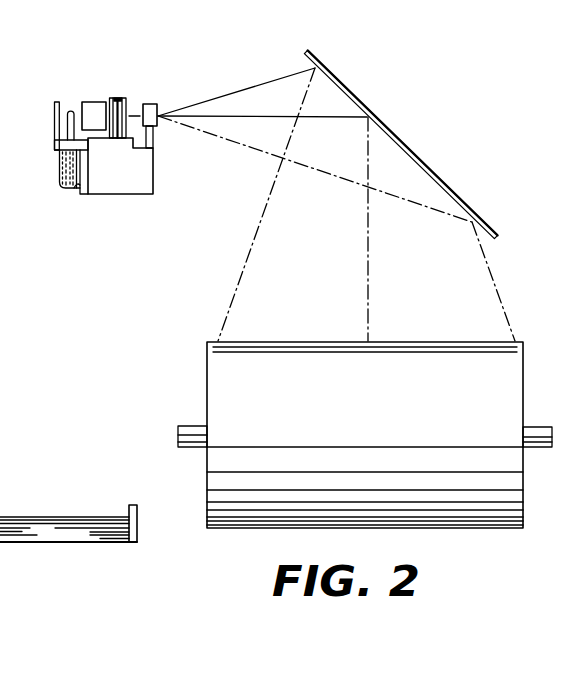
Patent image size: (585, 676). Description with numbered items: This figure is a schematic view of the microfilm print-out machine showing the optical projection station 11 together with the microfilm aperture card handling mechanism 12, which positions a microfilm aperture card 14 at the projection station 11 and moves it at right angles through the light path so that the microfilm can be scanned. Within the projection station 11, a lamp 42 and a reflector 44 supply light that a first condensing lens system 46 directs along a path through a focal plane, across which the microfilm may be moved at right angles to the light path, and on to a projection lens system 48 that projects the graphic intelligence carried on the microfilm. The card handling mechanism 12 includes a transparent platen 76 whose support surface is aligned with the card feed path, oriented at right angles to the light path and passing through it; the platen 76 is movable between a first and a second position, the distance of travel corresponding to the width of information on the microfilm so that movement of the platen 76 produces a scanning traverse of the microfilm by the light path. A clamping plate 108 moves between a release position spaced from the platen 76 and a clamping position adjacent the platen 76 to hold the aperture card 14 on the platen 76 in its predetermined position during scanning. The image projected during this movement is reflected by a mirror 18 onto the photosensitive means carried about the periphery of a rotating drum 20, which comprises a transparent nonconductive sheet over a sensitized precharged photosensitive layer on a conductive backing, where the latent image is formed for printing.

The optical projection station 11 is at (51, 86).
The microfilm aperture card handling mechanism 12 is at (103, 203).
The microfilm aperture card 14 is at (117, 98).
The mirror 18 is at (357, 93).
The rotating drum 20 is at (217, 378).
The lamp 42 is at (69, 122).
The reflector 44 is at (52, 135).
The first condensing lens system 46 is at (98, 108).
The projection lens system 48 is at (155, 103).
The transparent platen 76 is at (110, 98).
The clamping plate 108 is at (128, 98).